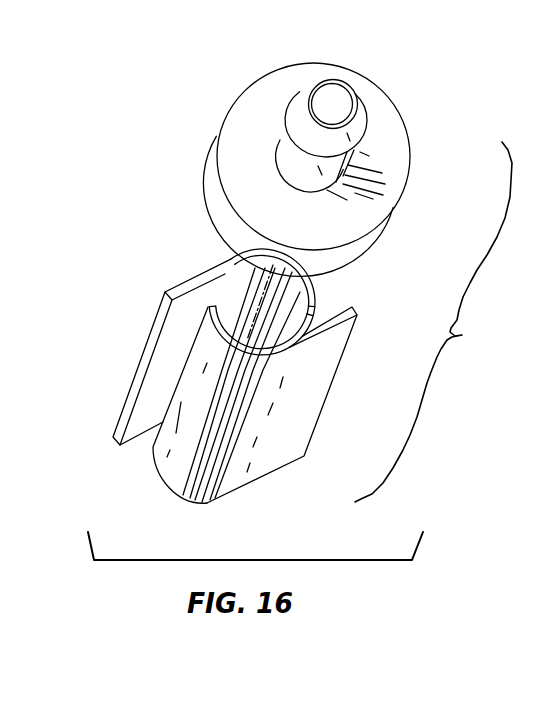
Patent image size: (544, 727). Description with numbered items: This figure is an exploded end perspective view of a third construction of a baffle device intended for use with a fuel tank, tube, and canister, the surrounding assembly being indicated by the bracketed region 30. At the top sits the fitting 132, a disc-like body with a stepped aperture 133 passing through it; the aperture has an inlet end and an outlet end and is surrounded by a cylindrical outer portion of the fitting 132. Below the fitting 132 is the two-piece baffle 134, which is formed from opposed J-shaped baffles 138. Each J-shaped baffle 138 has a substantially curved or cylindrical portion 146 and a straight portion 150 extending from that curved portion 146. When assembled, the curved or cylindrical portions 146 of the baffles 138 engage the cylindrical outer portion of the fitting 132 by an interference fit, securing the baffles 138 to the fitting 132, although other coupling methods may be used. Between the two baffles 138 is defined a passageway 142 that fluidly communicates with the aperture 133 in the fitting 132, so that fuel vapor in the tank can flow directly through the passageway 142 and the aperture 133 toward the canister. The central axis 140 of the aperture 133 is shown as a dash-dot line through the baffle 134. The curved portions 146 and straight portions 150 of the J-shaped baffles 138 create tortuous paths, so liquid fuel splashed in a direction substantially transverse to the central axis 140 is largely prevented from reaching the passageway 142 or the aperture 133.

The assembly 30 is at (433, 322).
The fitting 132 is at (210, 87).
The stepped aperture 133 is at (334, 98).
The two-piece baffle 134 is at (260, 357).
The J-shaped baffle 138 is at (248, 254).
The central axis 140 is at (252, 300).
The passageway 142 is at (287, 297).
The curved or cylindrical portion 146 is at (215, 354).
The straight portion 150 is at (183, 280).